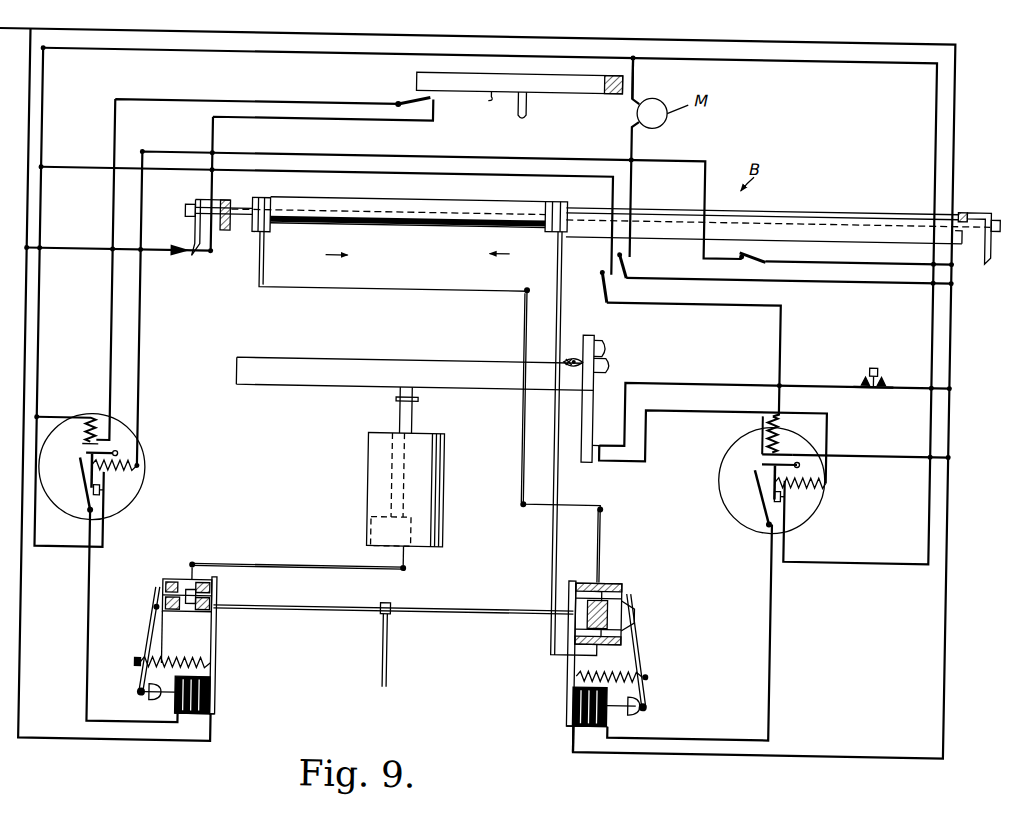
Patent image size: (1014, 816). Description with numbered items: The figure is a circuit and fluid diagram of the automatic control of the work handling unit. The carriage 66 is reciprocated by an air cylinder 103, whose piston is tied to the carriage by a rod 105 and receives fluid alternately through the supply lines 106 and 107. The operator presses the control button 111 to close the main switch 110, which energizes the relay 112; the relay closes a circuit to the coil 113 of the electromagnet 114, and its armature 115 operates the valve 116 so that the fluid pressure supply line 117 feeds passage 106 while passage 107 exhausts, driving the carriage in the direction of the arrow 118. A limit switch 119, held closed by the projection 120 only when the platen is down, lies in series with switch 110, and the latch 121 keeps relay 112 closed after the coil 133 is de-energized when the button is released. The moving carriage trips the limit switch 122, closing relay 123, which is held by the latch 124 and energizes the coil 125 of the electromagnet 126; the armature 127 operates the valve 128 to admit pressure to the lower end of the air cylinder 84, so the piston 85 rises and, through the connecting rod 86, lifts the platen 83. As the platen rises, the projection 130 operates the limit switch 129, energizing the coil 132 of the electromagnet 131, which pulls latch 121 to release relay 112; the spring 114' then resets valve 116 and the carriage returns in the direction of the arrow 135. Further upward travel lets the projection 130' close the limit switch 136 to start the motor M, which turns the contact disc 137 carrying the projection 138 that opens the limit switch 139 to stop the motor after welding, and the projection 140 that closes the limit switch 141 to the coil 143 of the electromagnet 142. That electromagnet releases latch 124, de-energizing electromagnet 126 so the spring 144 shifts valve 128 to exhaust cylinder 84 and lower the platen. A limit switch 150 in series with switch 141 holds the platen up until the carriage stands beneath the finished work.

The carriage 66 is at (818, 200).
The platen 83 is at (309, 380).
The air cylinder 84 is at (450, 478).
The piston 85 is at (452, 496).
The connecting rod 86 is at (422, 412).
The air cylinder 103 is at (446, 220).
The rod 105 is at (236, 226).
The fluid pressure supply line 106 is at (570, 296).
The fluid pressure supply line 107 is at (530, 326).
The main switch 110 is at (880, 378).
The control button 111 is at (884, 350).
The relay 112 is at (762, 506).
The coil 113 is at (584, 710).
The electromagnet 114 is at (638, 734).
The spring 114' is at (630, 650).
The armature 115 is at (660, 690).
The valve 116 is at (628, 572).
The fluid pressure supply line 117 is at (402, 646).
The arrow 118 is at (504, 248).
The limit switch 119 is at (598, 460).
The projection 120 is at (600, 428).
The latch 121 is at (770, 456).
The limit switch 122 is at (776, 244).
The relay 123 is at (120, 488).
The latch 124 is at (88, 456).
The coil 125 is at (222, 686).
The electromagnet 126 is at (180, 702).
The armature 127 is at (158, 684).
The valve 128 is at (188, 578).
The limit switch 129 is at (600, 272).
The projection 130 is at (620, 337).
The projection 130' is at (612, 357).
The electromagnet 131 is at (768, 425).
The coil 132 is at (792, 430).
The coil 133 is at (818, 470).
The arrow 135 is at (342, 254).
The limit switch 136 is at (638, 256).
The contact disc 137 is at (566, 84).
The projection 138 is at (614, 84).
The limit switch 139 is at (640, 70).
The projection 140 is at (492, 92).
The limit switch 141 is at (404, 88).
The electromagnet 142 is at (106, 414).
The coil 143 is at (92, 444).
The spring 144 is at (180, 656).
The limit switch 150 is at (195, 260).